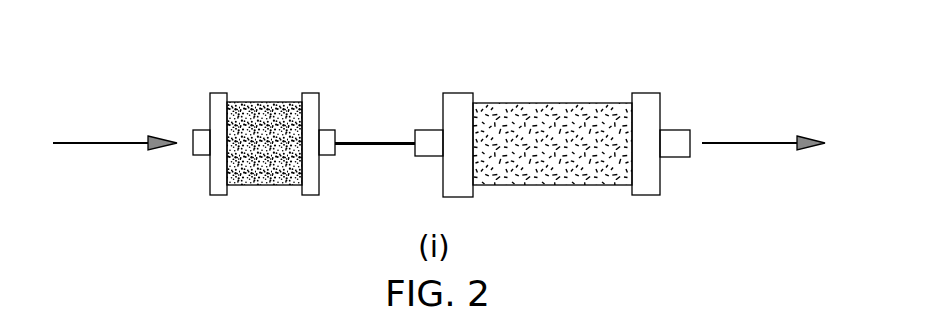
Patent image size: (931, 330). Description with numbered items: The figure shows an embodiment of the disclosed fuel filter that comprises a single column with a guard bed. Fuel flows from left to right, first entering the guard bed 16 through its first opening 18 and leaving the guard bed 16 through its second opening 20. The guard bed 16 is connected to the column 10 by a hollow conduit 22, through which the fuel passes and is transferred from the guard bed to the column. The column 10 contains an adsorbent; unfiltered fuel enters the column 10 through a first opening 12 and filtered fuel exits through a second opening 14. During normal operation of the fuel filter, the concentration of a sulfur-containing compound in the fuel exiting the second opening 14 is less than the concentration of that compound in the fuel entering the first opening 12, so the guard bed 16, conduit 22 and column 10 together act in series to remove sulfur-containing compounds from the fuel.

The column 10 is at (557, 103).
The first opening 12 is at (430, 130).
The second opening 14 is at (672, 130).
The guard bed 16 is at (260, 102).
The first opening 18 is at (203, 155).
The second opening 20 is at (323, 155).
The hollow conduit 22 is at (375, 142).